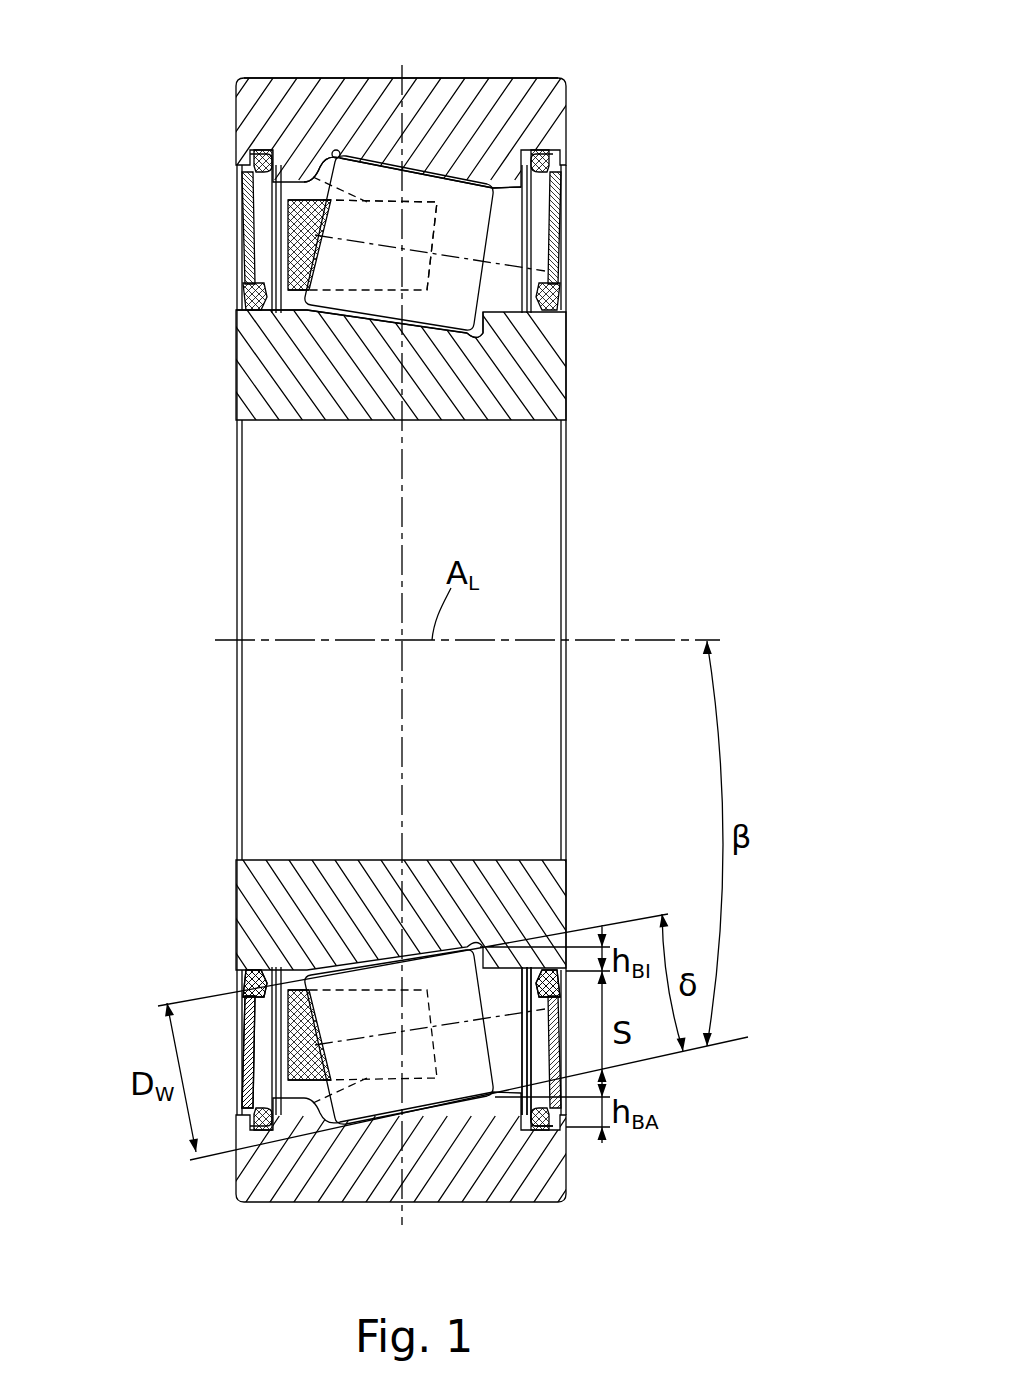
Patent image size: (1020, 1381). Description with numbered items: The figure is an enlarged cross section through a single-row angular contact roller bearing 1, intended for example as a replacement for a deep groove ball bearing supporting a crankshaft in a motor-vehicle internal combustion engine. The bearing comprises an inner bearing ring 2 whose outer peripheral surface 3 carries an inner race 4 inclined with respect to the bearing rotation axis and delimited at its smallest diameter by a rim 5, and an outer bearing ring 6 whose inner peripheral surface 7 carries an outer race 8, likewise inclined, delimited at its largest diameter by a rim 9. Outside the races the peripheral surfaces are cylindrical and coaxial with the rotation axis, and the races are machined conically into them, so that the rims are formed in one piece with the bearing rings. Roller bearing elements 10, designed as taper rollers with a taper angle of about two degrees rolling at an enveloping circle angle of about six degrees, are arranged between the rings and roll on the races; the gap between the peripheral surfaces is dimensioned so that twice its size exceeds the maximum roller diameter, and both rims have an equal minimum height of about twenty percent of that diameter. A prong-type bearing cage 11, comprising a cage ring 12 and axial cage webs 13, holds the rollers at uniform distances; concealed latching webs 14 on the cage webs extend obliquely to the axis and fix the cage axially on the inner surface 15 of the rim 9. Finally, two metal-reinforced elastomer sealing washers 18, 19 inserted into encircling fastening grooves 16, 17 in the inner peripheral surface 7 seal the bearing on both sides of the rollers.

The angular contact roller bearing 1 is at (460, 78).
The inner bearing ring 2 is at (300, 400).
The outer peripheral surface 3 is at (490, 335).
The inner race 4 is at (297, 340).
The rim 5 is at (506, 341).
The outer bearing ring 6 is at (525, 103).
The inner peripheral surface 7 is at (295, 192).
The outer race 8 is at (458, 163).
The rim 9 is at (318, 176).
The roller bearing elements 10 is at (463, 222).
The bearing cage 11 is at (279, 240).
The cage ring 12 is at (298, 270).
The cage webs 13 is at (540, 270).
The latching webs 14 is at (345, 185).
The inner surface 15 is at (341, 152).
The fastening groove 16 is at (258, 1140).
The fastening groove 17 is at (533, 1137).
The sealing washer 18 is at (262, 1137).
The sealing washer 19 is at (537, 1137).